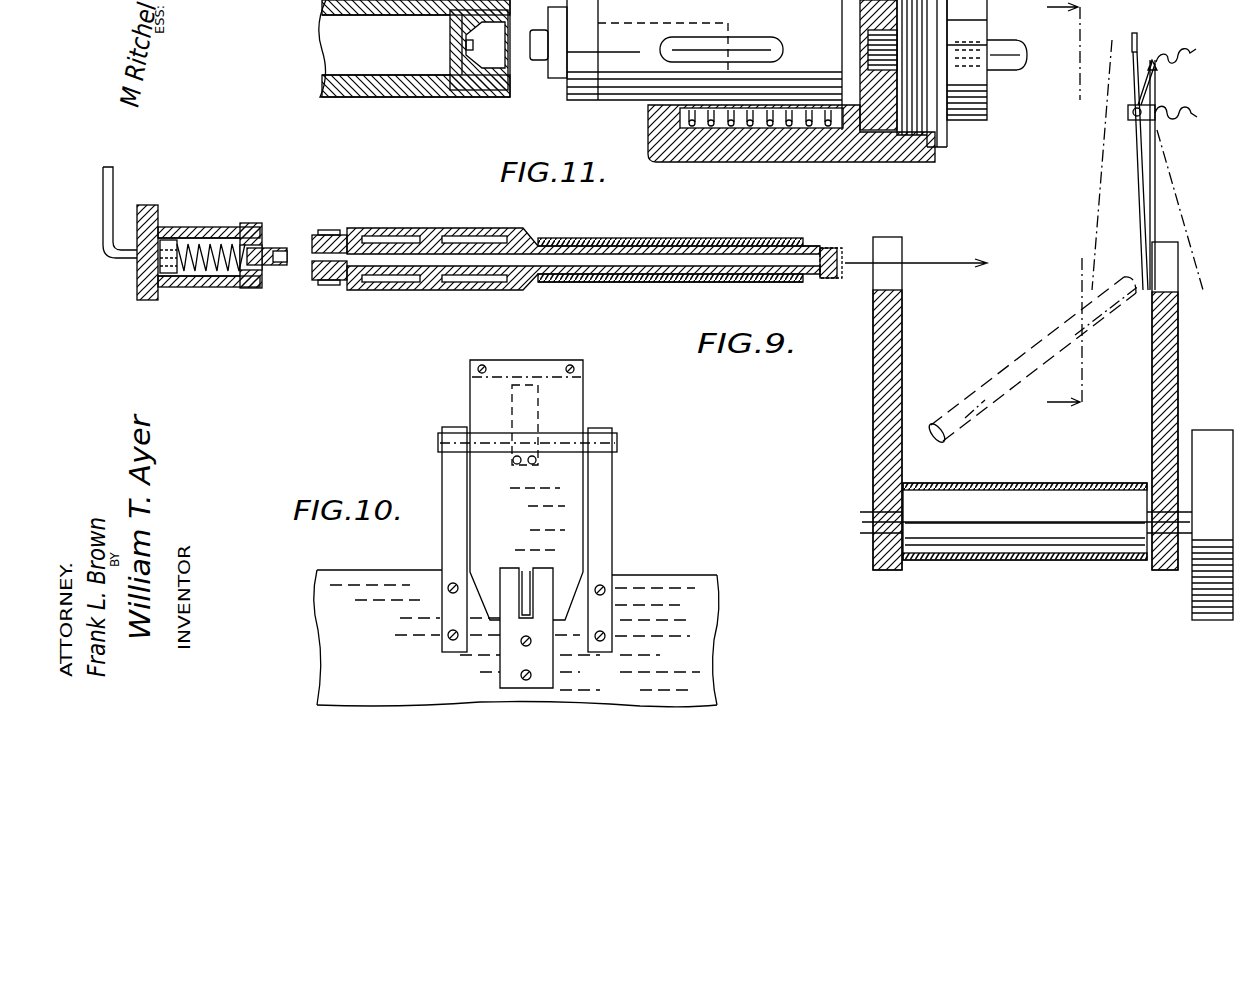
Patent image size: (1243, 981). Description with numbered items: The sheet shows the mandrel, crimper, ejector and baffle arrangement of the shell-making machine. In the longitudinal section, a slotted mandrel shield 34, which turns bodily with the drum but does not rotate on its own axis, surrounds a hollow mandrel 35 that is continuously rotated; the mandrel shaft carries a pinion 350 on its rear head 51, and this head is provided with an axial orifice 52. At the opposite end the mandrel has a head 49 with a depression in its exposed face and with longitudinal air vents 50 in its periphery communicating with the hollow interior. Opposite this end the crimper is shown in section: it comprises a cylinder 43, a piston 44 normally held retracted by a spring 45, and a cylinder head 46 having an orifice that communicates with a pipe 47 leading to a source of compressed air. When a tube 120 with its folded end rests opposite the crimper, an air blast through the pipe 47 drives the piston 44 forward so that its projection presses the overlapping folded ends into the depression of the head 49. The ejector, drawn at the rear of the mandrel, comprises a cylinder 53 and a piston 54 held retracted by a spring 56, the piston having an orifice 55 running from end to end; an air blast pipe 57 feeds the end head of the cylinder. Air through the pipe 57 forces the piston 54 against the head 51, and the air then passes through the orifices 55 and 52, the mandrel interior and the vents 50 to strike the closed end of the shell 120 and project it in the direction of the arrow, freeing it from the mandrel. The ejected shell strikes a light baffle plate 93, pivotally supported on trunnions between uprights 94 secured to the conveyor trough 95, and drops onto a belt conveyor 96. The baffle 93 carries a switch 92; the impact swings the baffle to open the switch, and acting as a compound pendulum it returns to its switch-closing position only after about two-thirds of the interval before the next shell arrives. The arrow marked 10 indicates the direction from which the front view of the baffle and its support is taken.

In FIG. 11, the air vents 50 is at (472, 82).
In FIG. 11, the piston 44 is at (617, 95).
In FIG. 11, the cylinder 43 is at (778, 162).
In FIG. 11, the spring 45 is at (730, 128).
In FIG. 11, the cylinder head 46 is at (912, 128).
In FIG. 11, the pipe 47 is at (1000, 62).
In FIG. 9, the air blast pipe 57 is at (103, 216).
In FIG. 9, the cylinder 53 is at (198, 228).
In FIG. 9, the orifice 55 is at (282, 247).
In FIG. 9, the piston 54 is at (175, 275).
In FIG. 9, the spring 56 is at (230, 275).
In FIG. 9, the axial orifice 52 is at (313, 262).
In FIG. 9, the head 51 is at (323, 232).
In FIG. 9, the pinion 350 is at (336, 231).
In FIG. 9, the mandrel shield 34 is at (583, 277).
In FIG. 9, the mandrel 35 is at (808, 277).
In FIG. 9, the head 49 is at (833, 245).
In FIG. 9, the tube 120 is at (808, 243).
In FIG. 9, the conveyor trough 95 is at (873, 377).
In FIG. 10, the conveyor trough 95 is at (650, 572).
In FIG. 9, the belt conveyor 96 is at (1033, 483).
In FIG. 9, the baffle plate 93 is at (1140, 210).
In FIG. 10, the baffle plate 93 is at (558, 490).
In FIG. 9, the switch 92 is at (1147, 89).
In FIG. 10, the switch 92 is at (540, 405).
In FIG. 10, the uprights 94 is at (600, 518).
In FIG. 9, the view direction indicator 10 is at (1125, 215).